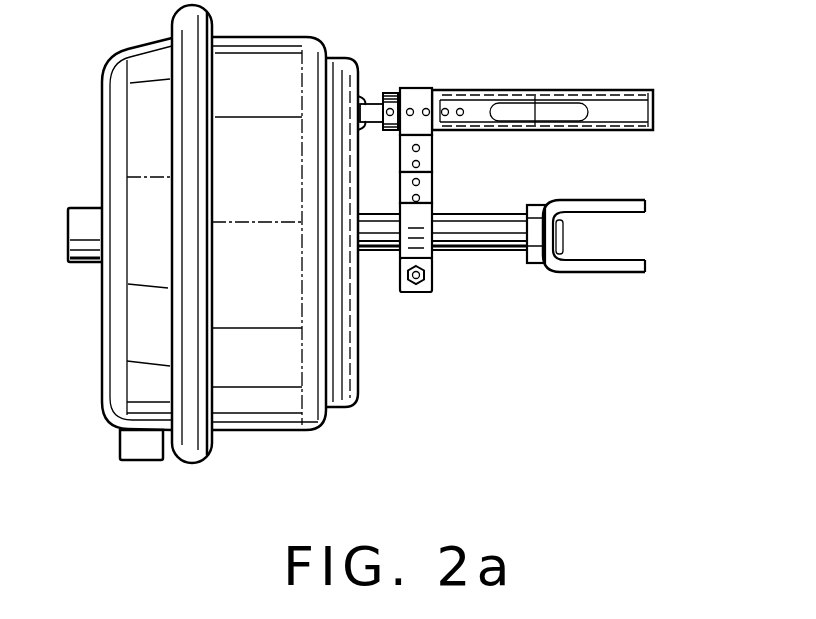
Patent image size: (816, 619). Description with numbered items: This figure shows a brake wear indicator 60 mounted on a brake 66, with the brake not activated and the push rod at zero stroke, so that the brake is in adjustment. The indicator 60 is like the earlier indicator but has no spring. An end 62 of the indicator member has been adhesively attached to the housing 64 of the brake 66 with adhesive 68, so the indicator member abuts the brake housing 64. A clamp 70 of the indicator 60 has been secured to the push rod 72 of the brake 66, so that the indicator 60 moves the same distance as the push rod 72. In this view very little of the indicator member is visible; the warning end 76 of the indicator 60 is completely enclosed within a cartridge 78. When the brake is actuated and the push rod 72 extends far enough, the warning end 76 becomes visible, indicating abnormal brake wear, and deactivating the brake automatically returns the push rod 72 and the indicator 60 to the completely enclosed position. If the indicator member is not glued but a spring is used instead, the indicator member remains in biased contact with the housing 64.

The brake wear indicator 60 is at (438, 157).
The end of indicator member 62 is at (364, 102).
The housing 64 is at (342, 330).
The brake 66 is at (253, 412).
The adhesive 68 is at (365, 133).
The clamp 70 is at (430, 188).
The push rod 72 is at (492, 238).
The warning end 76 is at (563, 107).
The cartridge 78 is at (655, 122).